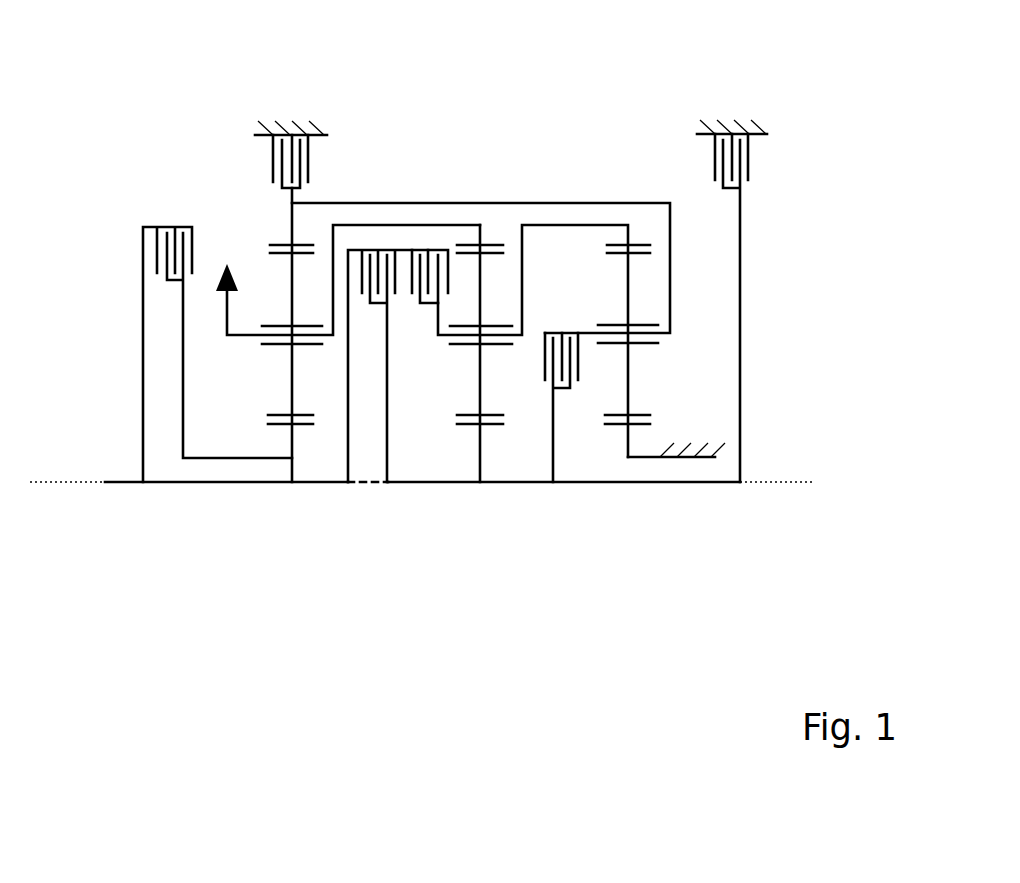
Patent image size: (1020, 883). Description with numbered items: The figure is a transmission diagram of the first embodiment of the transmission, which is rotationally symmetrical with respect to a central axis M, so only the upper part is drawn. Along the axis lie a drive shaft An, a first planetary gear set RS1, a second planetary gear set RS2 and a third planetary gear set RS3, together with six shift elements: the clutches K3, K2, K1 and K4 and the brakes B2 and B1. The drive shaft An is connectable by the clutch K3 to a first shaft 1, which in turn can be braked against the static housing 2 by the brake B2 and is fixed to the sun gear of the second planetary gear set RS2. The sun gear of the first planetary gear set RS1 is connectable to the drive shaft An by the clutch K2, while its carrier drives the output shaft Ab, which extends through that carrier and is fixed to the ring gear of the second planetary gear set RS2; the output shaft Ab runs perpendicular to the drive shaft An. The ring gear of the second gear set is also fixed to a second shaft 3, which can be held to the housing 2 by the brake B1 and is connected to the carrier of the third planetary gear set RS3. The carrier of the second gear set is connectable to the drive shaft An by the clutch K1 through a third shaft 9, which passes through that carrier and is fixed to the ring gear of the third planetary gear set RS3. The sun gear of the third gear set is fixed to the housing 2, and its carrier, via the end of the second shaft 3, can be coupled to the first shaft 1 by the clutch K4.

The first shaft 1 is at (425, 484).
The housing 2 is at (290, 120).
The second shaft 3 is at (505, 203).
The third shaft 9 is at (588, 223).
The fifth shift element K1 is at (425, 247).
The third shift element K2 is at (163, 224).
The first shift element K3 is at (373, 247).
The sixth shift element K4 is at (560, 322).
The fourth shift element B1 is at (270, 162).
The second shift element B2 is at (756, 158).
The first planetary gear set RS1 is at (290, 484).
The second planetary gear set RS2 is at (480, 484).
The third planetary gear set RS3 is at (628, 484).
The drive shaft An is at (67, 468).
The output shaft Ab is at (346, 280).
The central axis M is at (776, 468).